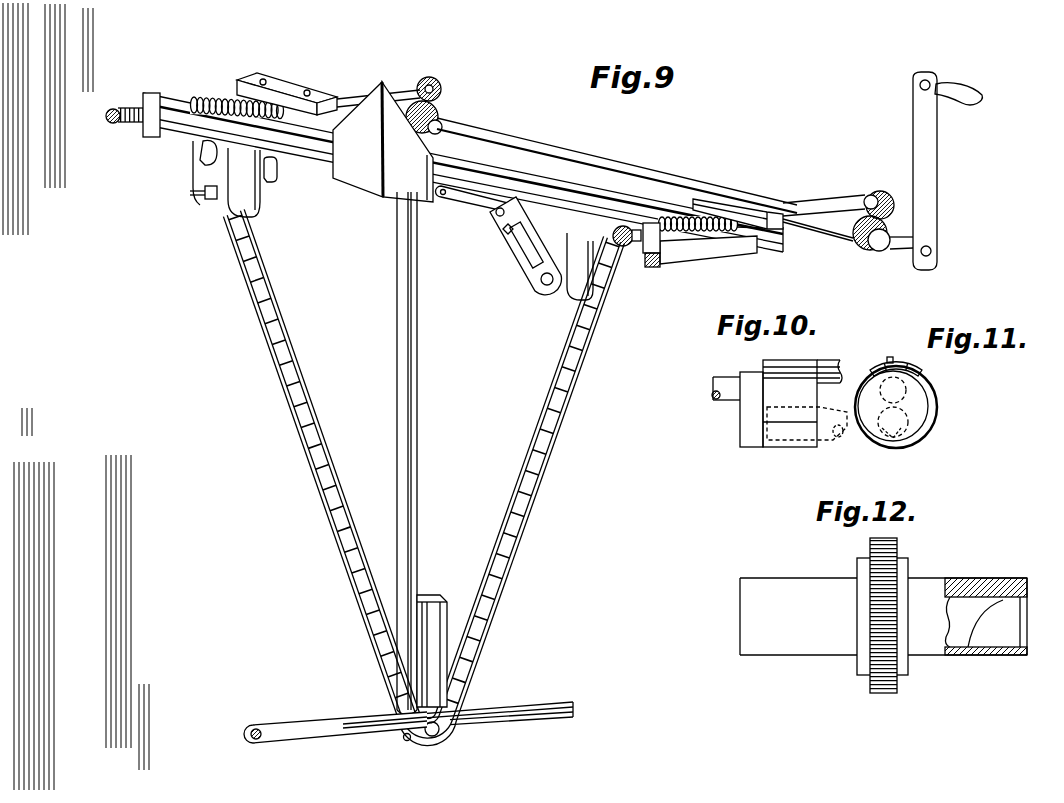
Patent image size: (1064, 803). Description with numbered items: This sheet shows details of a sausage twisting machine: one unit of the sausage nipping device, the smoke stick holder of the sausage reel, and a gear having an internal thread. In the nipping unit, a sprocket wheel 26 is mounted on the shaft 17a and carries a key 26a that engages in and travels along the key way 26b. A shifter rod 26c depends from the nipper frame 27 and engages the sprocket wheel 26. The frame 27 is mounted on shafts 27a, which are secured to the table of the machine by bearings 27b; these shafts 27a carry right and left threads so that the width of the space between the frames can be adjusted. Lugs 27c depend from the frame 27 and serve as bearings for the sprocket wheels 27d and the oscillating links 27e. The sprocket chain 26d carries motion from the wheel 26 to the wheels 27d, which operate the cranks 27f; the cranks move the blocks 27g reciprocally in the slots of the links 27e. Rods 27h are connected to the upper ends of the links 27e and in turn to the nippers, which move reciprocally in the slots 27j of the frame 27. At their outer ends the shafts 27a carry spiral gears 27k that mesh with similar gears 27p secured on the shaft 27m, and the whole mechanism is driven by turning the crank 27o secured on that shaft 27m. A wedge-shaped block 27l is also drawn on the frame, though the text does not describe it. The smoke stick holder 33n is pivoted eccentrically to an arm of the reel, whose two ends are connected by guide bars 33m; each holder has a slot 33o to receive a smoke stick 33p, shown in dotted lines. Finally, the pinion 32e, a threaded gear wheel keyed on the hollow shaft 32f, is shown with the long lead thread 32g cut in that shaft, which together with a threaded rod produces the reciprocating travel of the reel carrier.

In FIG. 9, the nipper frame 27 is at (475, 186).
In FIG. 9, the shaft 27a is at (347, 91).
In FIG. 9, the bearing 27b is at (292, 84).
In FIG. 9, the lug 27c is at (207, 172).
In FIG. 9, the sprocket wheel 27d is at (268, 176).
In FIG. 9, the oscillating link 27e is at (513, 257).
In FIG. 9, the crank 27f is at (200, 151).
In FIG. 9, the block 27g is at (503, 228).
In FIG. 9, the rod 27h is at (473, 203).
In FIG. 9, the slot 27j is at (150, 124).
In FIG. 9, the spiral gear 27k is at (442, 86).
In FIG. 9, the wedge block 27l is at (397, 178).
In FIG. 9, the shaft 27m is at (581, 157).
In FIG. 9, the crank 27o is at (934, 168).
In FIG. 9, the spiral gear 27p is at (441, 113).
In FIG. 9, the sprocket wheel 26 is at (463, 737).
In FIG. 9, the key 26a is at (423, 730).
In FIG. 9, the key way 26b is at (523, 705).
In FIG. 9, the shifter rod 26c is at (411, 474).
In FIG. 9, the sprocket chain 26d is at (276, 299).
In FIG. 9, the shaft 17a is at (293, 727).
In FIG. 10, the guide bar 33m is at (827, 366).
In FIG. 11, the guide bar 33m is at (893, 360).
In FIG. 10, the smoke stick holder 33n is at (752, 438).
In FIG. 11, the smoke stick holder 33n is at (935, 400).
In FIG. 10, the slot 33o is at (780, 415).
In FIG. 11, the slot 33o is at (872, 390).
In FIG. 11, the smoke stick 33p is at (887, 436).
In FIG. 12, the pinion 32e is at (870, 550).
In FIG. 12, the hollow shaft 32f is at (883, 616).
In FIG. 12, the long lead thread 32g is at (967, 607).